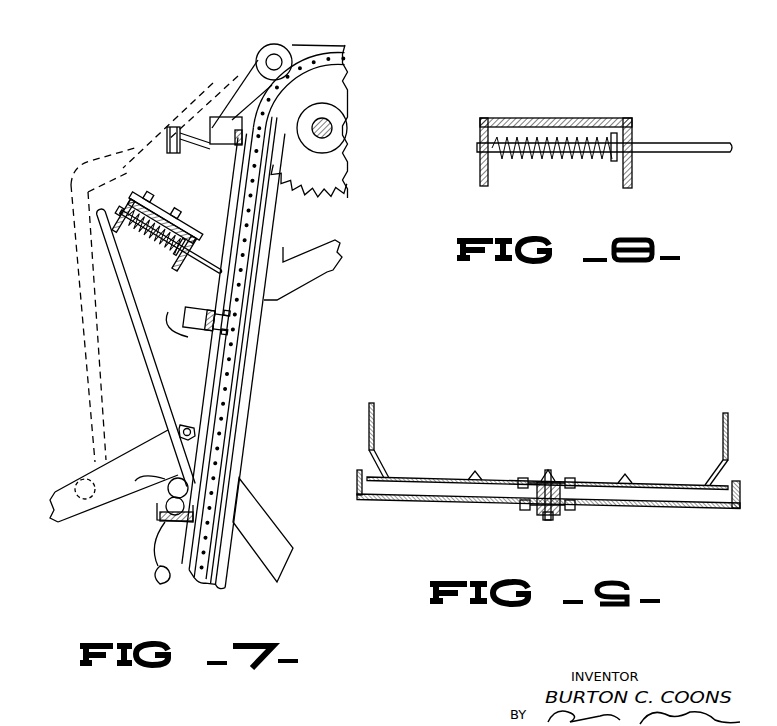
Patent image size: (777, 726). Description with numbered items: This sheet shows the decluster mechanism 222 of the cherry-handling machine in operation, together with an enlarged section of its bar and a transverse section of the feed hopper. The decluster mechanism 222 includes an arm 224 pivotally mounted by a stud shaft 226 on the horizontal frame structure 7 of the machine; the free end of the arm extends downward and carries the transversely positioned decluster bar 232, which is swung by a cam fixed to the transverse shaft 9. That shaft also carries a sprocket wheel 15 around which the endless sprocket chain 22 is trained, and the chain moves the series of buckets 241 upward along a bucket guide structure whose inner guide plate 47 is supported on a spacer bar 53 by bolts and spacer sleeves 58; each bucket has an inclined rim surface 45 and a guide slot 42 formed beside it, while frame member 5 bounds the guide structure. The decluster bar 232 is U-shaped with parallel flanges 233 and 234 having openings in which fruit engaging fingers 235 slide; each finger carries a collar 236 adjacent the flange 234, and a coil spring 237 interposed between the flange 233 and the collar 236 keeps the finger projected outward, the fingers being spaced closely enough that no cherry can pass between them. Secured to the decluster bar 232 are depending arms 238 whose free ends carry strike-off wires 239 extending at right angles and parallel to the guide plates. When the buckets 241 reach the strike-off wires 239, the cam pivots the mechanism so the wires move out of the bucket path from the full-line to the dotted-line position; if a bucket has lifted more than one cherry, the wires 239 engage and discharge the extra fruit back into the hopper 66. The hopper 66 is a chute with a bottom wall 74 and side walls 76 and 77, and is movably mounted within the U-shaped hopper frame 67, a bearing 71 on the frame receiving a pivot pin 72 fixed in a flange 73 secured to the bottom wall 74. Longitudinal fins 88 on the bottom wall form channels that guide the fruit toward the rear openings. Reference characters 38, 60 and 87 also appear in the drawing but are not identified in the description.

In FIG. 7, the frame member 5 is at (223, 366).
In FIG. 7, the horizontal frame structure 7 is at (329, 273).
In FIG. 7, the transverse shaft 9 is at (347, 127).
In FIG. 7, the sprocket wheel 15 is at (341, 98).
In FIG. 7, the endless sprocket chain 22 is at (252, 227).
In FIG. 7, the mounting bracket 38 is at (240, 150).
In FIG. 7, the guide slot 42 is at (232, 318).
In FIG. 7, the inclined rim surface 45 is at (162, 510).
In FIG. 7, the guide plate 47 is at (202, 462).
In FIG. 7, the spacer bar 53 is at (176, 126).
In FIG. 7, the spacer sleeve 58 is at (217, 98).
In FIG. 7, the guide channel 60 is at (227, 410).
In FIG. 9, the fruit receiving hopper 66 is at (723, 425).
In FIG. 9, the hopper frame 67 is at (742, 500).
In FIG. 9, the bearing 71 is at (558, 510).
In FIG. 9, the pivot pin 72 is at (549, 521).
In FIG. 9, the flange 73 is at (551, 475).
In FIG. 9, the bottom wall 74 is at (442, 477).
In FIG. 9, the side wall 76 is at (719, 464).
In FIG. 9, the side wall 77 is at (369, 432).
In FIG. 7, the pivot arm 87 is at (94, 476).
In FIG. 9, the fin 88 is at (477, 472).
In FIG. 7, the decluster mechanism 222 is at (137, 158).
In FIG. 7, the arm 224 is at (248, 67).
In FIG. 7, the stud shaft 226 is at (276, 61).
In FIG. 7, the decluster bar 232 is at (186, 262).
In FIG. 8, the decluster bar 232 is at (592, 119).
In FIG. 7, the flange 233 is at (104, 220).
In FIG. 8, the flange 233 is at (480, 160).
In FIG. 7, the flange 234 is at (172, 250).
In FIG. 8, the flange 234 is at (633, 175).
In FIG. 7, the fruit engaging finger 235 is at (207, 262).
In FIG. 8, the fruit engaging finger 235 is at (715, 135).
In FIG. 7, the collar 236 is at (179, 246).
In FIG. 8, the collar 236 is at (612, 162).
In FIG. 7, the coil spring 237 is at (153, 231).
In FIG. 8, the coil spring 237 is at (557, 157).
In FIG. 7, the depending arm 238 is at (155, 394).
In FIG. 7, the strike-off wire 239 is at (160, 450).
In FIG. 7, the bucket 241 is at (172, 302).